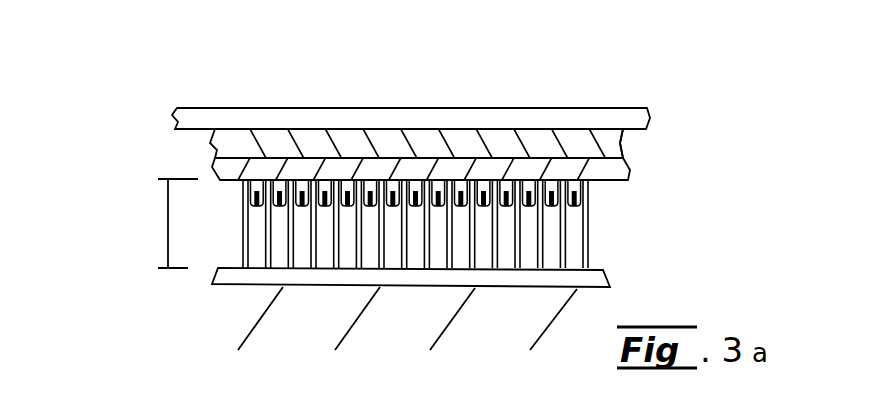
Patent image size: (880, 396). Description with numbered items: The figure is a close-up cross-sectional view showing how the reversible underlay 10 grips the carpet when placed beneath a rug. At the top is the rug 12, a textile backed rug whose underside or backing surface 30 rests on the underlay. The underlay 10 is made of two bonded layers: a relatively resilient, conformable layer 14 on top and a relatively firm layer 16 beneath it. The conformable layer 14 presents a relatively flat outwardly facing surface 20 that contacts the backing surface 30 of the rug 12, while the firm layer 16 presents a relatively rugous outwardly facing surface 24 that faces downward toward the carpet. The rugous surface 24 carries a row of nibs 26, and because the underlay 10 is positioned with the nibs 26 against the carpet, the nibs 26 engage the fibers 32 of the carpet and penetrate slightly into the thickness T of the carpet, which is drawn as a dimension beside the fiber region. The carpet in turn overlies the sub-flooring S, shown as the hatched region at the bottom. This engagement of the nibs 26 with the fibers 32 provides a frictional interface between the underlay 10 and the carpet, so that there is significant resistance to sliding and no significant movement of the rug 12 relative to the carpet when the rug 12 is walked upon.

The reversible underlay 10 is at (200, 152).
The rug 12 is at (240, 100).
The relatively resilient, conformable layer 14 is at (498, 140).
The relatively firm layer 16 is at (210, 167).
The relatively flat outwardly facing surface 20 is at (345, 129).
The relatively rugous outwardly facing surface 24 is at (228, 186).
The nibs 26 is at (573, 205).
The backing surface 30 is at (628, 133).
The fibers 32 is at (588, 242).
The thickness T is at (168, 220).
The sub-flooring S is at (411, 309).